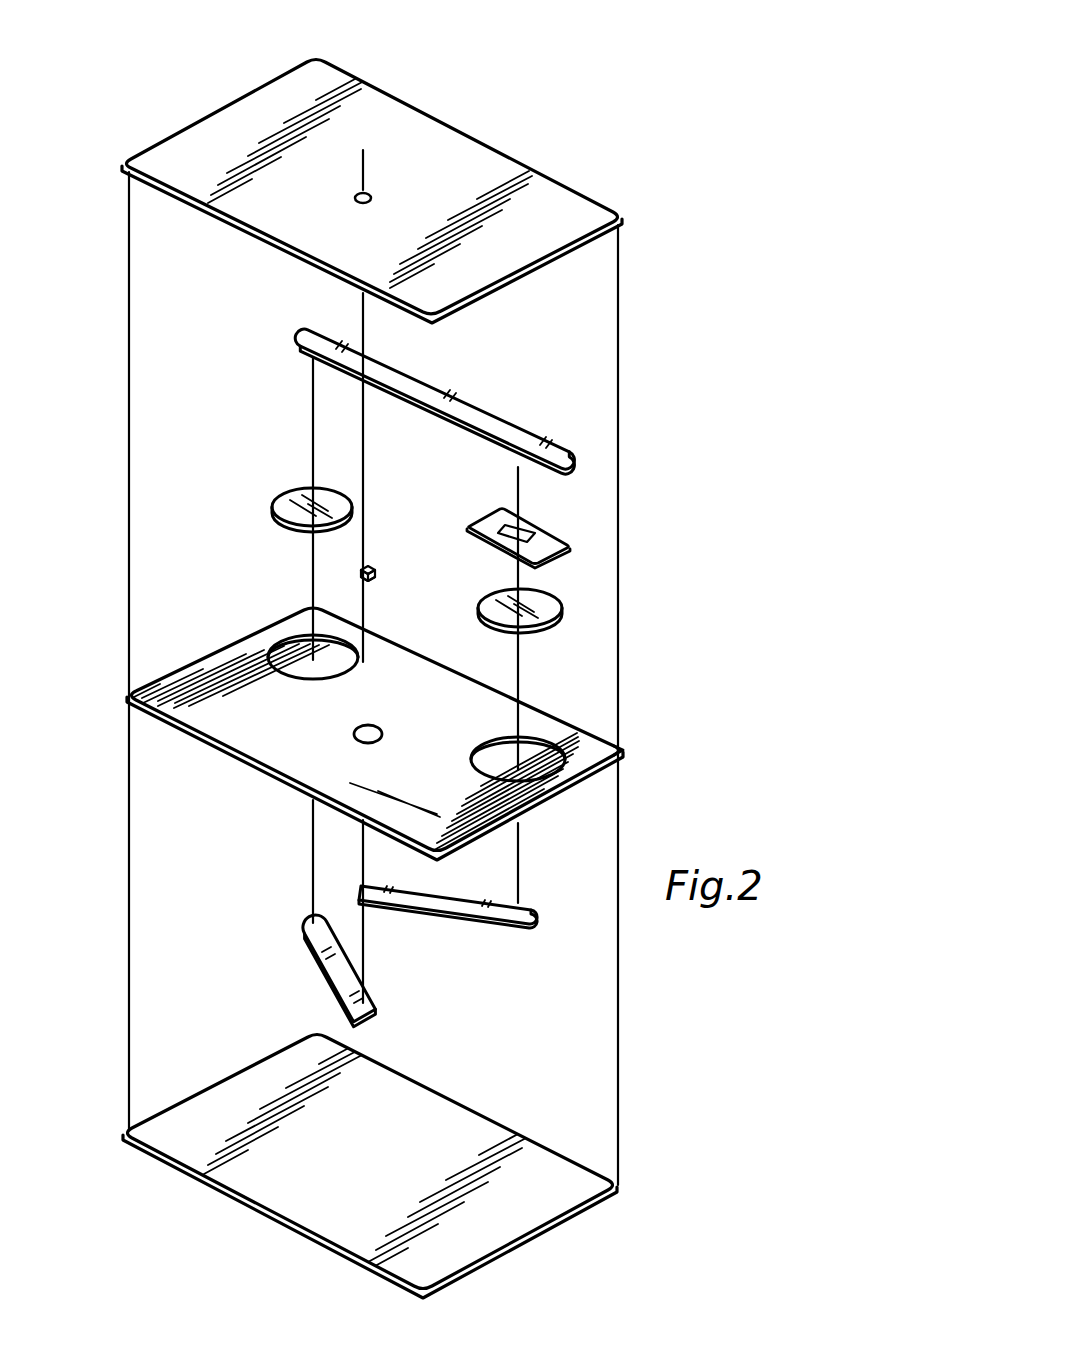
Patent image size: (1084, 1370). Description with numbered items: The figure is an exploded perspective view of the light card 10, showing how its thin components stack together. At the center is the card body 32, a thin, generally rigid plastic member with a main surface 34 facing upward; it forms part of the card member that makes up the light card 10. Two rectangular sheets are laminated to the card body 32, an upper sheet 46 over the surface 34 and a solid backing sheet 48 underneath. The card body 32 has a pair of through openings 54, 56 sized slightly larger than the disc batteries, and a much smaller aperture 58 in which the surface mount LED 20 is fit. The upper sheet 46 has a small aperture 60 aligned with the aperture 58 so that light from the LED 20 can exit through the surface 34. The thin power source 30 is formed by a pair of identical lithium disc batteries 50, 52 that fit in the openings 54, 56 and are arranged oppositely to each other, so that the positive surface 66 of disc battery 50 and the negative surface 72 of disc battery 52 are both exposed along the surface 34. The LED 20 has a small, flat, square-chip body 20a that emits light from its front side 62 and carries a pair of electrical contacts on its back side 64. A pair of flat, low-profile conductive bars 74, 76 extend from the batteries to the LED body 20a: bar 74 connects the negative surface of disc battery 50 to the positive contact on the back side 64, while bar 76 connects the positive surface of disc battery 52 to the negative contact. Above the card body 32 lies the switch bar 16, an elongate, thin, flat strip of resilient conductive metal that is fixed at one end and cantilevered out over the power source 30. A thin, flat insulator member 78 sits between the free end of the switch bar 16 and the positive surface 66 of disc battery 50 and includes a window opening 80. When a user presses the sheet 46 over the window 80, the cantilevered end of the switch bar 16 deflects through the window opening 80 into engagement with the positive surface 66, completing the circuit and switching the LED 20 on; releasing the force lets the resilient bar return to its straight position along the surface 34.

The light card 10 is at (690, 112).
The switch bar 16 is at (535, 392).
The surface mount LED 20 is at (386, 591).
The LED body 20a is at (377, 572).
The thin power source 30 is at (578, 622).
The card body 32 is at (644, 748).
The main surface 34 is at (213, 703).
The sheet 46 is at (563, 184).
The backing sheet 48 is at (547, 1213).
The disc battery 50 is at (560, 600).
The disc battery 52 is at (273, 505).
The opening 54 is at (545, 745).
The opening 56 is at (278, 640).
The aperture 58 is at (357, 743).
The aperture 60 is at (367, 197).
The front side 62 is at (369, 562).
The back side 64 is at (362, 580).
The positive surface 66 is at (555, 625).
The negative surface 72 is at (297, 491).
The conductive bar 74 is at (458, 917).
The conductive bar 76 is at (333, 972).
The insulator member 78 is at (547, 548).
The window opening 80 is at (527, 532).